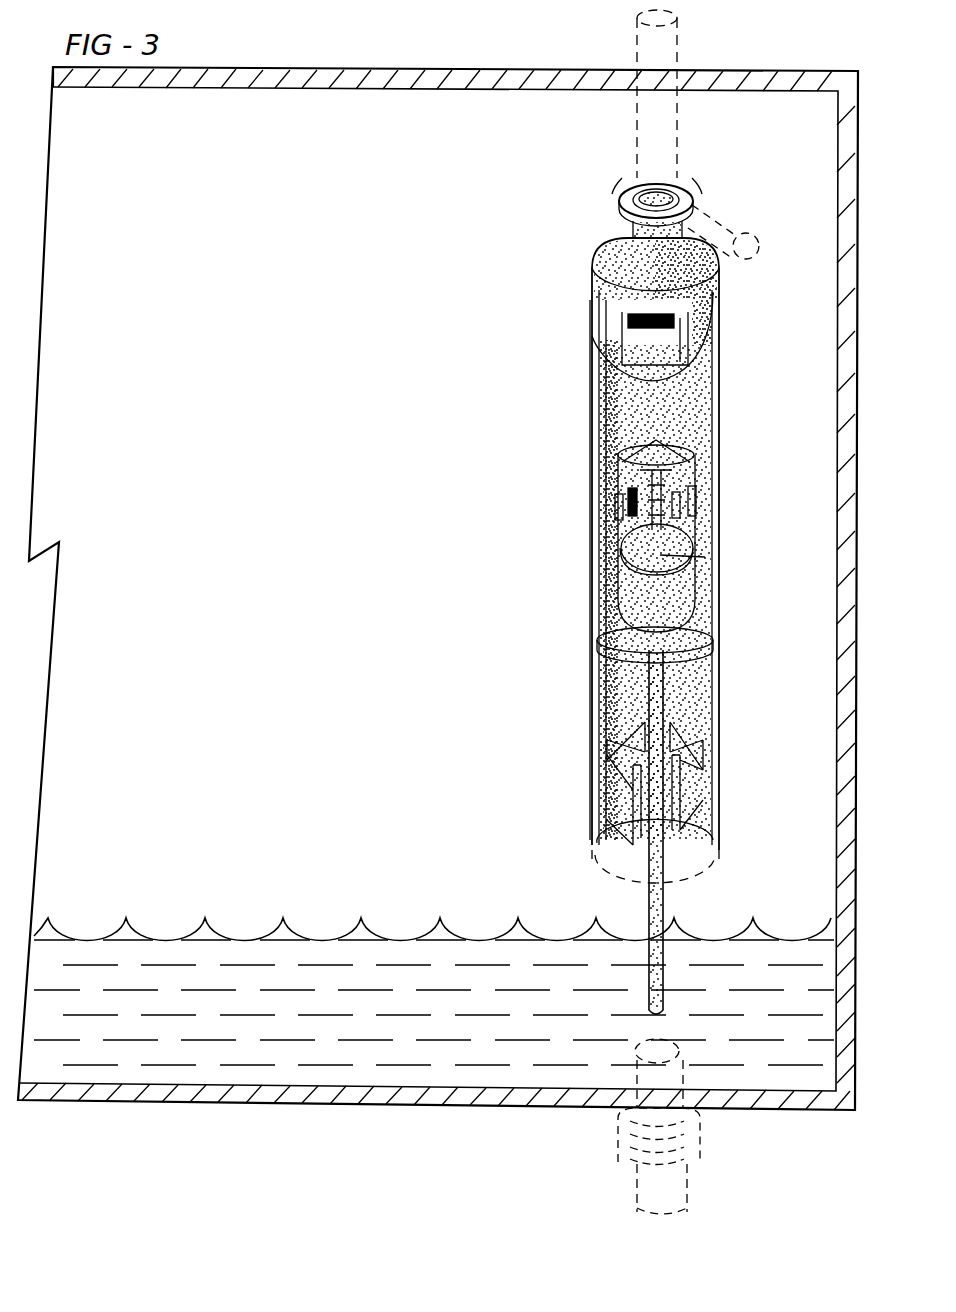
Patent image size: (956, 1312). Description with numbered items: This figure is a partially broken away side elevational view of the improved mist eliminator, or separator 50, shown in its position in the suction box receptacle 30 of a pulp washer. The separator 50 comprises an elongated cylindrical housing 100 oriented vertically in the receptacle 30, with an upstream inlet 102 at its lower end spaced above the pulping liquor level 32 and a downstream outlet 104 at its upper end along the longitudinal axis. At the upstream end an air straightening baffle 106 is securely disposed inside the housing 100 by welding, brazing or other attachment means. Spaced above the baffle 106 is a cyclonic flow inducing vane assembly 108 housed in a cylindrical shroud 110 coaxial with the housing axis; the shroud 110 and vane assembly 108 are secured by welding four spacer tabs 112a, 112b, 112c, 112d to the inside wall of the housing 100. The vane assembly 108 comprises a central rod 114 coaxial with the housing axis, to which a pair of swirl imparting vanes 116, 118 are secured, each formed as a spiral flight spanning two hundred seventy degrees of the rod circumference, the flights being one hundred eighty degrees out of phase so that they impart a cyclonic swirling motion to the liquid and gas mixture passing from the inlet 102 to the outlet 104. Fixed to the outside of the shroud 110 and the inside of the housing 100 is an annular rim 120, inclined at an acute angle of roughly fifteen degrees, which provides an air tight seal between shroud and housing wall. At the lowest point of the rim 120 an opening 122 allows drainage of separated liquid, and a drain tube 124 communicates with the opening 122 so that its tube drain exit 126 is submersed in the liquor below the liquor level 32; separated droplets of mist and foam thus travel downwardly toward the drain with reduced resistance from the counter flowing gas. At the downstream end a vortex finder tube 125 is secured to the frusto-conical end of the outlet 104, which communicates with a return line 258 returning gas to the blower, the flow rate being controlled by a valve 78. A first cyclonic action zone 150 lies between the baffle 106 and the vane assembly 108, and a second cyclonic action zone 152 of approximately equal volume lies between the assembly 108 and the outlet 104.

The receptacle 30 is at (857, 235).
The pulping liquor level 32 is at (85, 960).
The separator 50 is at (747, 499).
The valve 78 is at (755, 222).
The cylindrical housing 100 is at (722, 306).
The upstream inlet 102 is at (713, 863).
The downstream outlet 104 is at (618, 212).
The air straightening baffle 106 is at (688, 771).
The cyclonic flow inducing vane assembly 108 is at (700, 538).
The cylindrical shroud 110 is at (598, 408).
The spacer tab 112a is at (626, 452).
The spacer tab 112b is at (700, 456).
The spacer tab 112c is at (697, 522).
The spacer tab 112d is at (612, 514).
The central rod 114 is at (672, 442).
The swirl imparting vane 116 is at (591, 548).
The swirl imparting vane 118 is at (703, 556).
The annular rim 120 is at (606, 607).
The opening 122 is at (601, 652).
The drain tube 124 is at (665, 903).
The vortex finder tube 125 is at (703, 388).
The tube drain exit 126 is at (658, 1012).
The first cyclonic action zone 150 is at (703, 687).
The second cyclonic action zone 152 is at (600, 382).
The return line 258 is at (682, 50).